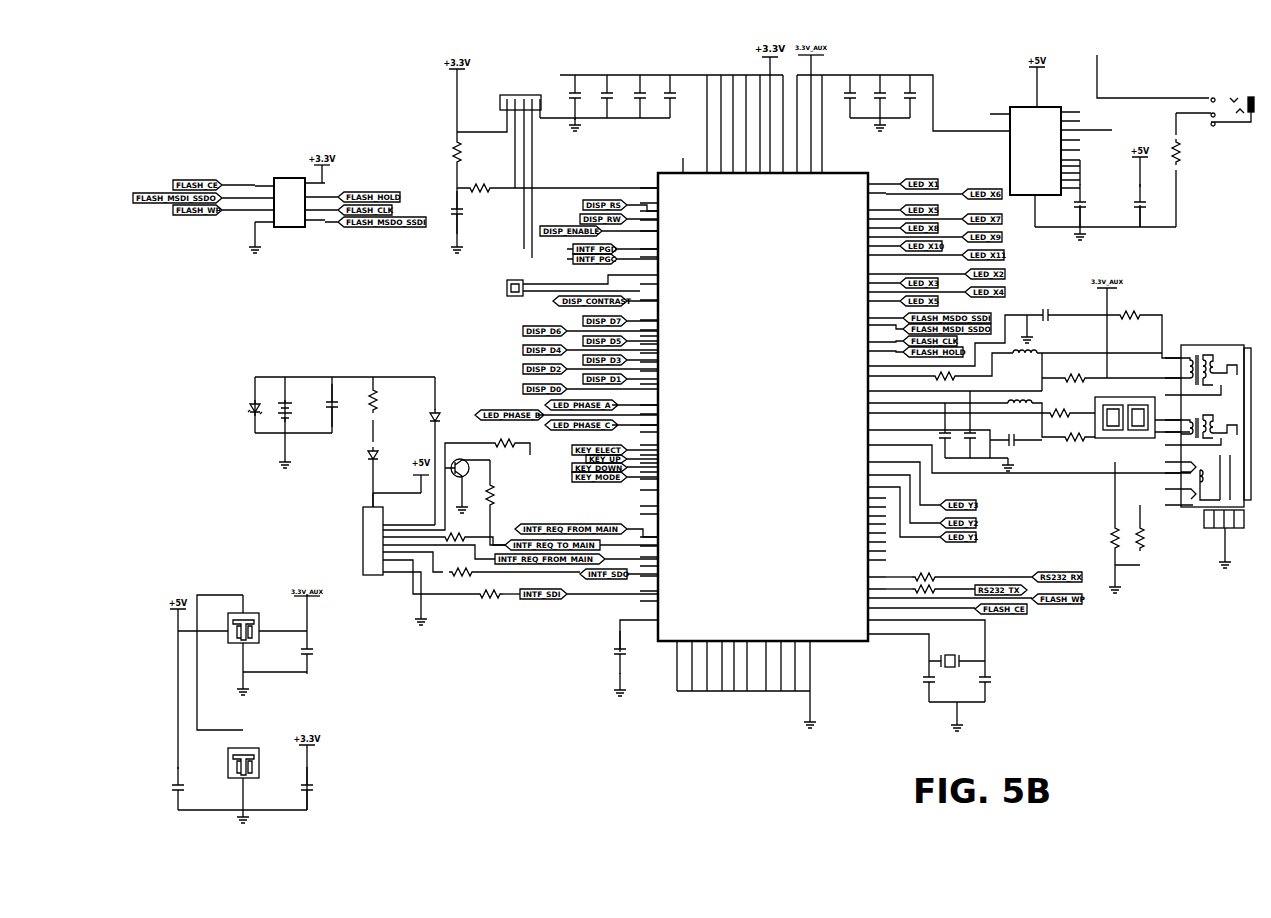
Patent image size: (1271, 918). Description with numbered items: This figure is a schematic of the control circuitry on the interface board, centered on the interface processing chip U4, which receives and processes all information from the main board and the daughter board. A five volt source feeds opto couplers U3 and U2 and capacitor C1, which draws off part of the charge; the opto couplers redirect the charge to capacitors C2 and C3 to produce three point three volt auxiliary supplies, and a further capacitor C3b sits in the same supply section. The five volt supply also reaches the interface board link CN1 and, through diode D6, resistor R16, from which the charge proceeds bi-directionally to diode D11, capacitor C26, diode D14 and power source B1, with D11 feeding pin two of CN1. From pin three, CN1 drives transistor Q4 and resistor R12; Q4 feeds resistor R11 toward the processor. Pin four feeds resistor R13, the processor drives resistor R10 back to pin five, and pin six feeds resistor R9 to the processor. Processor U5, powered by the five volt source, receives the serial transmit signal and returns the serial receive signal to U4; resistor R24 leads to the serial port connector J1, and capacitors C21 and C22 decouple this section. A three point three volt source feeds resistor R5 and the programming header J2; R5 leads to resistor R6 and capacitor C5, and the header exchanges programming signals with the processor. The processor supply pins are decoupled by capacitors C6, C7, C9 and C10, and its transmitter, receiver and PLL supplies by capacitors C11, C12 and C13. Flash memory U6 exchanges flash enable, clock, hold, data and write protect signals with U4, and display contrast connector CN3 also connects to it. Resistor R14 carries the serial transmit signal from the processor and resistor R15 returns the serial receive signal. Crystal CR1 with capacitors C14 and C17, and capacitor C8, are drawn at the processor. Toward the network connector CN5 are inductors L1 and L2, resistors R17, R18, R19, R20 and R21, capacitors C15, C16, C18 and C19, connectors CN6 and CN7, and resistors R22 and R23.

The interface processing chip U4 is at (763, 391).
The processor U5 is at (1051, 161).
The flash RAM U6 is at (290, 204).
The opto coupler U2 is at (243, 765).
The opto coupler U3 is at (243, 629).
The interface board link CN1 is at (413, 527).
The display contrast connector CN3 is at (568, 285).
The Ethernet connector with magnetics CN5 is at (1212, 444).
The connector CN6 is at (1125, 417).
The connector CN7 is at (1137, 413).
The RS232-1 COM1 connector J1 is at (1175, 103).
The programming header J2 is at (519, 96).
The transistor Q4 is at (467, 479).
The diode D6 is at (369, 455).
The diode D11 is at (435, 422).
The diode D14 is at (256, 411).
The power source B1 is at (292, 407).
The crystal 25 MHz CR1 is at (956, 663).
The inductor 120R L1 is at (1018, 357).
The inductor 120R L2 is at (1013, 407).
The resistor R5 is at (459, 152).
The resistor 330R R6 is at (557, 190).
The resistor R9 is at (498, 596).
The resistor R10 is at (514, 574).
The resistor R11 is at (491, 502).
The resistor R12 is at (511, 445).
The resistor R13 is at (473, 539).
The resistor R14 is at (917, 587).
The resistor R15 is at (917, 574).
The resistor R16 is at (375, 402).
The resistor 2.26K 1% R17 is at (937, 373).
The resistor 49.9R 1% R18 is at (1058, 414).
The resistor 49.9R 1% R19 is at (1064, 445).
The resistor 49.9R 1% R20 is at (1130, 316).
The resistor 49.9R 1% R21 is at (1074, 380).
The resistor 1K R22 is at (1116, 538).
The resistor 1K R23 is at (1141, 538).
The resistor R24 is at (1177, 152).
The capacitor C1 is at (178, 788).
The capacitor C2 is at (307, 652).
The capacitor C3 is at (456, 212).
The capacitor 33uF C3b is at (307, 788).
The capacitor C5 is at (575, 96).
The capacitor C6 is at (607, 96).
The capacitor C7 is at (640, 96).
The capacitor 10uF C8 is at (623, 651).
The capacitor C9 is at (670, 96).
The capacitor C10 is at (690, 100).
The capacitor C11 is at (850, 96).
The capacitor C12 is at (910, 96).
The capacitor 0.1uF C13 is at (880, 96).
The capacitor 27pF C14 is at (929, 680).
The capacitor 56pF C15 is at (942, 436).
The capacitor 56pF C16 is at (967, 436).
The capacitor 27pF C17 is at (985, 680).
The capacitor 0.1uF C18 is at (1010, 440).
The capacitor 0.1uF C19 is at (1043, 317).
The capacitor 0.1uF C21 is at (1084, 205).
The capacitor 0.1uF C22 is at (1144, 205).
The capacitor C26 is at (333, 405).